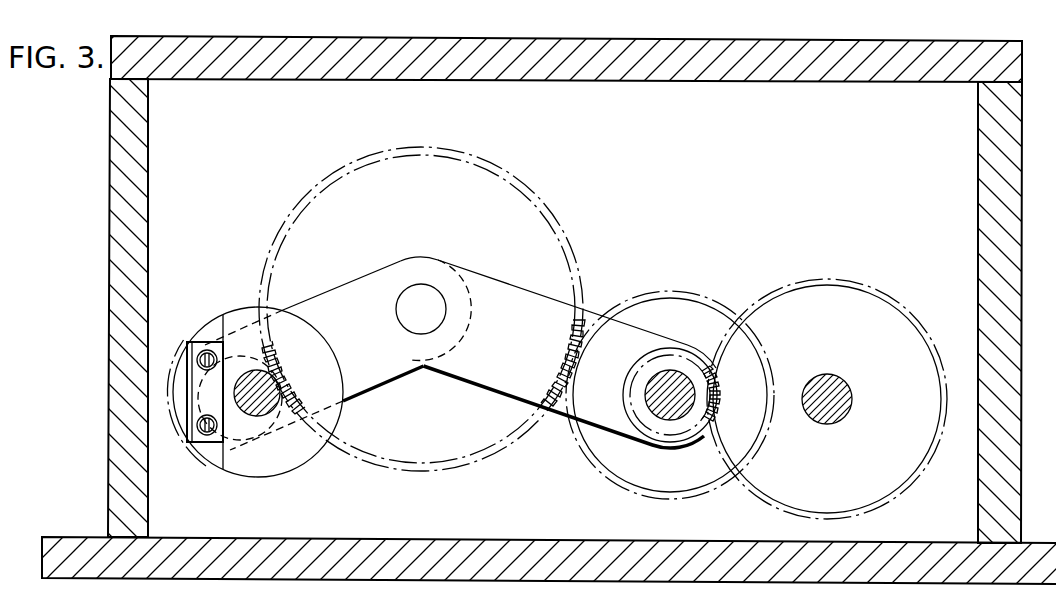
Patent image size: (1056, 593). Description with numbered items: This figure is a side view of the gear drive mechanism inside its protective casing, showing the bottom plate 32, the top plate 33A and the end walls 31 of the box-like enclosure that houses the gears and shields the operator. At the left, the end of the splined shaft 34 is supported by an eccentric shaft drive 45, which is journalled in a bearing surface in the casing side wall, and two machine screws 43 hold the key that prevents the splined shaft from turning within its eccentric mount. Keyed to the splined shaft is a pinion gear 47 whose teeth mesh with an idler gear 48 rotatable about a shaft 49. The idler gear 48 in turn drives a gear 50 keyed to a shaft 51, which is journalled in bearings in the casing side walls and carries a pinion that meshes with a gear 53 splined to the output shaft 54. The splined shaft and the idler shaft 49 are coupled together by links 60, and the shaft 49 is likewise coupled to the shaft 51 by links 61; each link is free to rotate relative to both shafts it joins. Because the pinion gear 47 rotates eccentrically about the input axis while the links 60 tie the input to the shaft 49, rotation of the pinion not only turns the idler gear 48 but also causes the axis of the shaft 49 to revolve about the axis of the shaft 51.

The end walls 31 is at (110, 229).
The bottom plate 32 is at (80, 537).
The top wall of housing 33A is at (663, 80).
The shaft 34 is at (268, 412).
The machine screws 43 is at (190, 343).
The eccentric shaft drive 45 is at (237, 473).
The pinion gear 47 is at (240, 337).
The idler gear 48 is at (443, 470).
The shaft 49 is at (422, 284).
The gear 50 is at (638, 292).
The shaft 51 is at (675, 421).
The gear 53 is at (832, 281).
The output shaft 54 is at (845, 405).
The links 60 is at (336, 289).
The links 61 is at (518, 288).